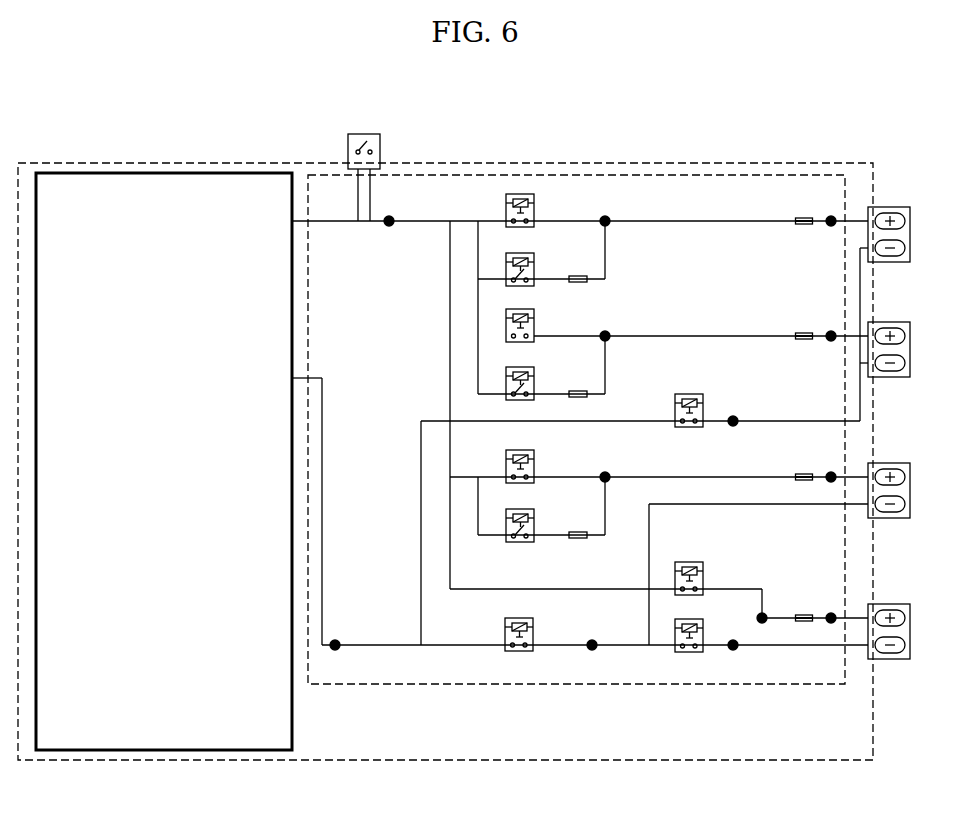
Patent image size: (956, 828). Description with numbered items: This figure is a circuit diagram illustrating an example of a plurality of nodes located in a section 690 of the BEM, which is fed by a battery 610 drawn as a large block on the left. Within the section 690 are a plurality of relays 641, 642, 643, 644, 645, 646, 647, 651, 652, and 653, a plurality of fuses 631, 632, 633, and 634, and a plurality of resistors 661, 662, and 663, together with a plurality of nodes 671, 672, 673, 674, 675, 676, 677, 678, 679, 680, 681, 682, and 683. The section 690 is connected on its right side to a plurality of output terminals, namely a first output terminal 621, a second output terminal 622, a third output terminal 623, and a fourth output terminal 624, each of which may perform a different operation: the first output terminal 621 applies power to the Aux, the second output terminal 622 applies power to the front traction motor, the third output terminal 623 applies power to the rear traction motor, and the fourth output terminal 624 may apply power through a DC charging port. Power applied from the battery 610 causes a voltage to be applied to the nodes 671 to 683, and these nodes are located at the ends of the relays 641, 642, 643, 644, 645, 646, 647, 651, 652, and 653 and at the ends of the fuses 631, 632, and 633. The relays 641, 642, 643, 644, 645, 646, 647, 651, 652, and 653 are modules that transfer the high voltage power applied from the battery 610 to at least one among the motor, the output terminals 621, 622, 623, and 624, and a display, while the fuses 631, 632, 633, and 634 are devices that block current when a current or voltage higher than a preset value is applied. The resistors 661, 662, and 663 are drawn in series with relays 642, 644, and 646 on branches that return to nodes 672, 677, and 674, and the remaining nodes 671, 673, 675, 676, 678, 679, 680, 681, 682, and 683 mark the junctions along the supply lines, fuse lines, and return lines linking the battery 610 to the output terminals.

The battery 610 is at (228, 173).
The section of the BEM 690 is at (737, 175).
The first output terminal 621 is at (890, 208).
The second output terminal 622 is at (893, 464).
The third output terminal 623 is at (890, 323).
The fourth output terminal 624 is at (893, 605).
The fuse 631 is at (795, 219).
The fuse 632 is at (795, 476).
The fuse 633 is at (795, 334).
The fourth fuse 634 is at (807, 612).
The relay 641 is at (534, 206).
The relay 642 is at (534, 262).
The relay 643 is at (534, 460).
The relay 644 is at (534, 516).
The relay 645 is at (534, 318).
The relay 646 is at (534, 374).
The relay 647 is at (704, 566).
The relay 651 is at (704, 408).
The relay 652 is at (533, 624).
The relay 653 is at (704, 624).
The resistor 661 is at (590, 281).
The resistor 662 is at (590, 537).
The resistor 663 is at (590, 396).
The node 671 is at (386, 224).
The node 672 is at (609, 226).
The node 673 is at (829, 226).
The node 674 is at (609, 341).
The node 675 is at (829, 341).
The node 676 is at (731, 426).
The node 677 is at (609, 482).
The node 678 is at (829, 471).
The node 679 is at (763, 624).
The node 680 is at (832, 624).
The node 681 is at (339, 642).
The node 682 is at (597, 641).
The node 683 is at (728, 648).